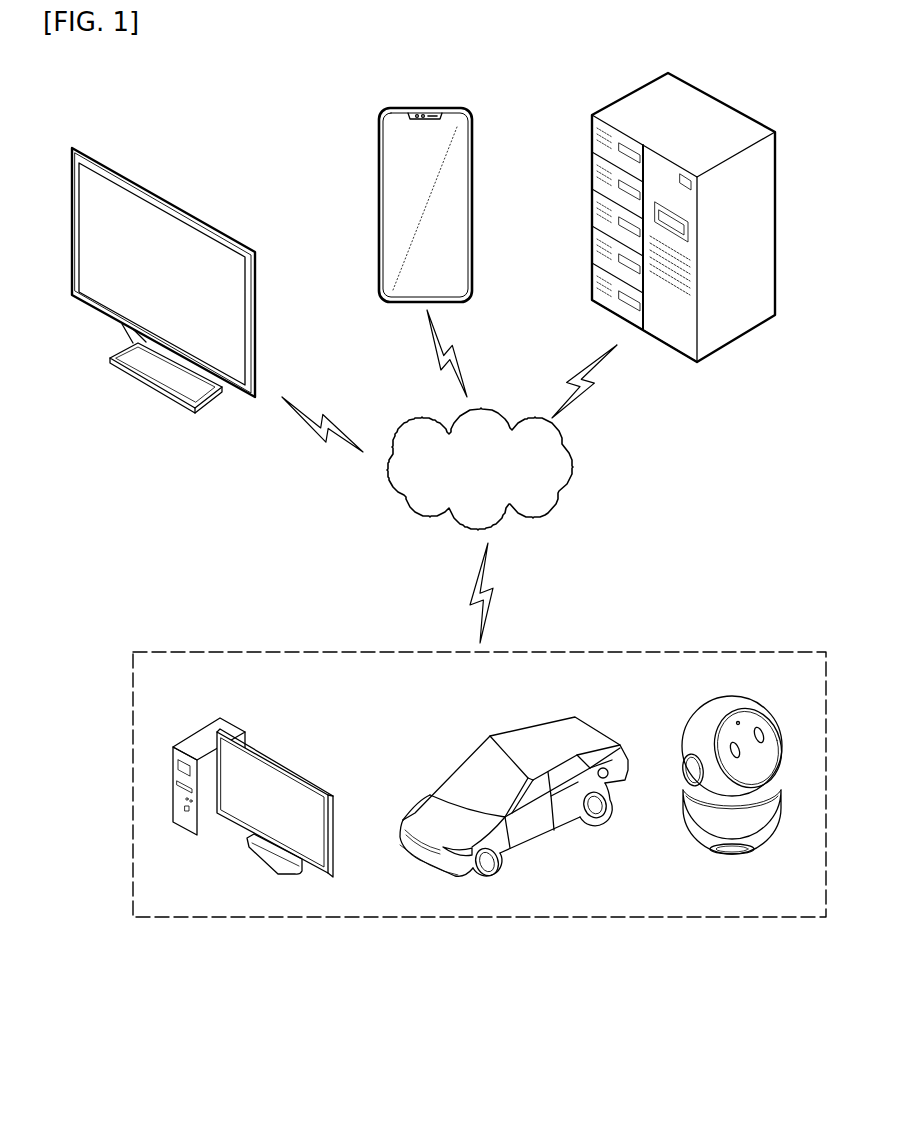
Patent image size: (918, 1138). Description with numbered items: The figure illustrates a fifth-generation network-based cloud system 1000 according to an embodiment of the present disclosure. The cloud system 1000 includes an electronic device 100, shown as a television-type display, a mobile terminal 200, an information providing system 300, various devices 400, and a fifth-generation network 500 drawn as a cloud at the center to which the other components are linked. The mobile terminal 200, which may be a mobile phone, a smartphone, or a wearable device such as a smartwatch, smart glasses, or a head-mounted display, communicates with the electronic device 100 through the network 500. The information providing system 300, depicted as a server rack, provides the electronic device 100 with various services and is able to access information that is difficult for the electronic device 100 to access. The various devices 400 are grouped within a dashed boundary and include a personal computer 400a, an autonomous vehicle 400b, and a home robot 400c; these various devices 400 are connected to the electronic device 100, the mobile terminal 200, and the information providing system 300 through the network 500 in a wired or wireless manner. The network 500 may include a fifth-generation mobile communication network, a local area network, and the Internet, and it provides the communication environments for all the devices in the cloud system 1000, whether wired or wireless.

The electronic device 100 is at (215, 227).
The mobile terminal 200 is at (453, 110).
The information providing system 300 is at (738, 110).
The various devices 400 is at (721, 652).
The personal computer 400a is at (277, 763).
The autonomous vehicle 400b is at (527, 730).
The home robot 400c is at (750, 705).
The 5G network 500 is at (483, 408).
The 5G network-based cloud system 1000 is at (146, 976).